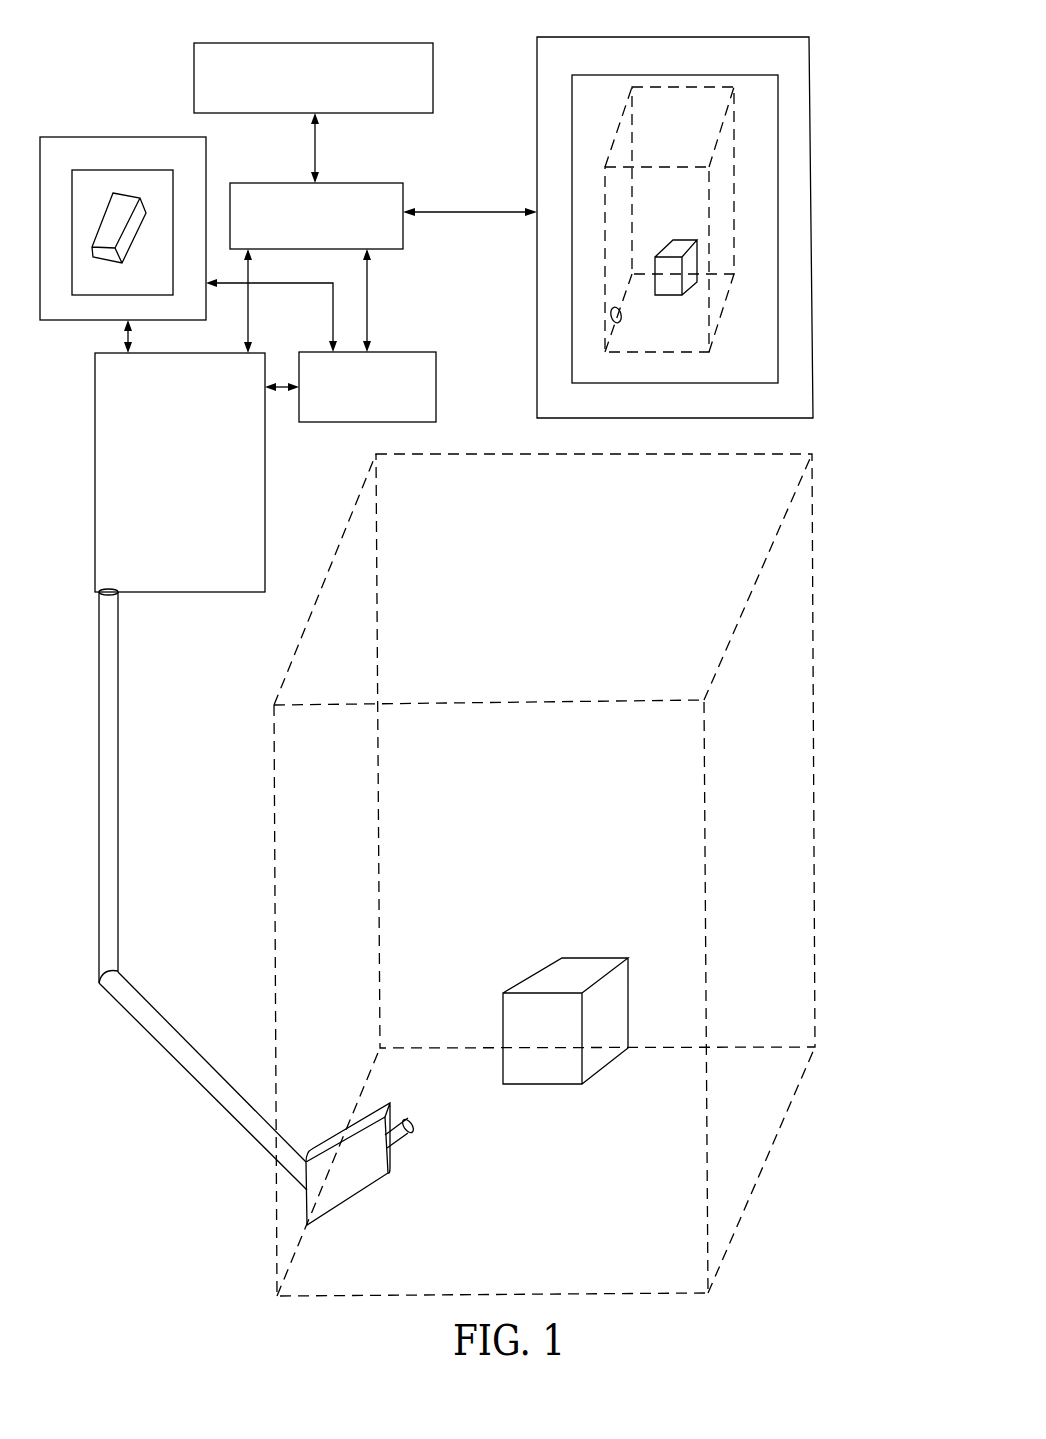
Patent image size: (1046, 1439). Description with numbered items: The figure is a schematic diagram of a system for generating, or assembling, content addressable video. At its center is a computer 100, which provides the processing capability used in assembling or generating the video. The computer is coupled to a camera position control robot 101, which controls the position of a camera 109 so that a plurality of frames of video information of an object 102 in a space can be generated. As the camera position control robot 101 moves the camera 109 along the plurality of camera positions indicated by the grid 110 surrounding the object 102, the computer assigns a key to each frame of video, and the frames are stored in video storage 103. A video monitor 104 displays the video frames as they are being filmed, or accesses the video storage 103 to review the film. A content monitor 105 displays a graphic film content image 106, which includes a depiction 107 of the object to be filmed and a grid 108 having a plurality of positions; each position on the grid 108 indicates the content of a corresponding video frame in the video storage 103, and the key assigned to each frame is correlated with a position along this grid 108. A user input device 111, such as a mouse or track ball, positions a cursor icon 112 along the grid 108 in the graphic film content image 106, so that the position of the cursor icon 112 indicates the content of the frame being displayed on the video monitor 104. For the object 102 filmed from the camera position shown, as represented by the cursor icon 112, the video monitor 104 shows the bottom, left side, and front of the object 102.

The computer 100 is at (367, 183).
The camera position control robot 101 is at (183, 592).
The object 102 is at (600, 956).
The video storage 103 is at (402, 352).
The video monitor 104 is at (137, 137).
The content monitor 105 is at (807, 50).
The graphic film content image 106 is at (770, 155).
The depiction of the object 107 is at (695, 252).
The grid 108 is at (698, 353).
The camera 109 is at (368, 1185).
The grid of camera positions 110 is at (758, 1187).
The user input device 111 is at (293, 43).
The cursor icon 112 is at (618, 322).